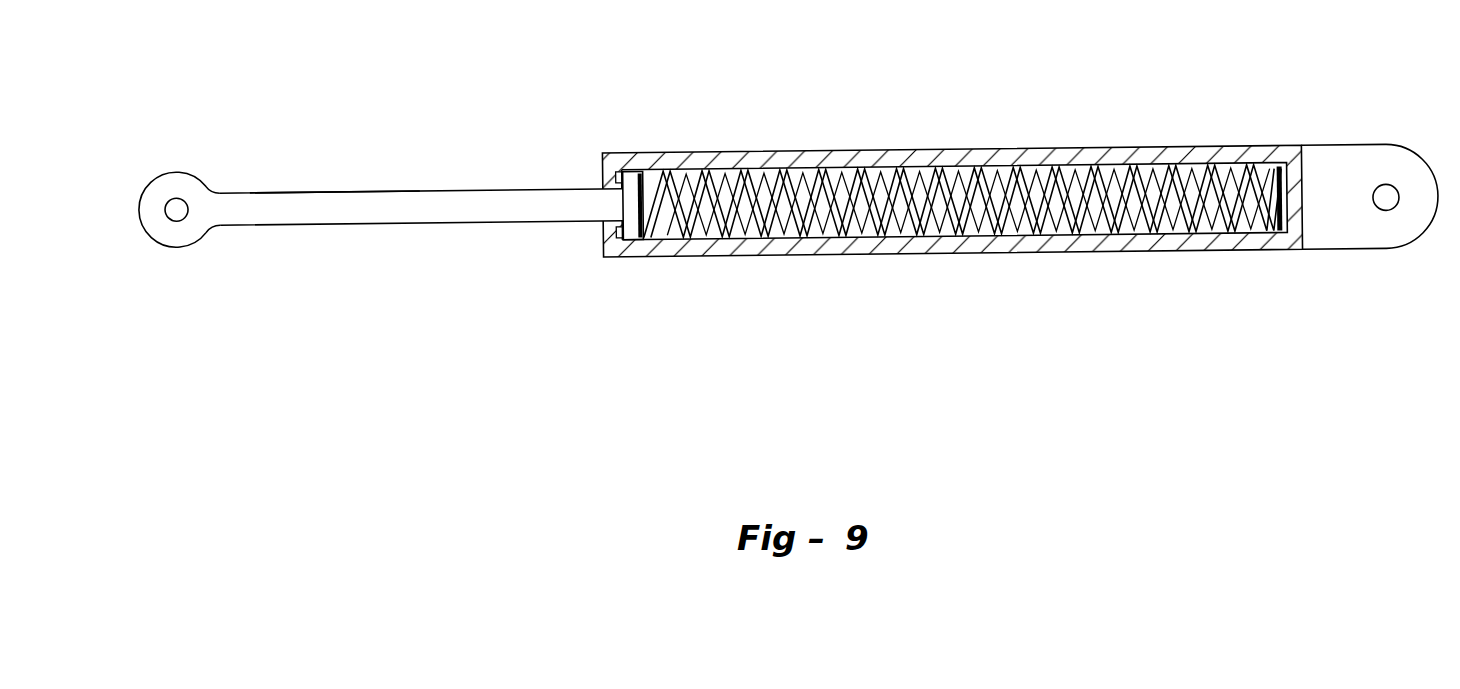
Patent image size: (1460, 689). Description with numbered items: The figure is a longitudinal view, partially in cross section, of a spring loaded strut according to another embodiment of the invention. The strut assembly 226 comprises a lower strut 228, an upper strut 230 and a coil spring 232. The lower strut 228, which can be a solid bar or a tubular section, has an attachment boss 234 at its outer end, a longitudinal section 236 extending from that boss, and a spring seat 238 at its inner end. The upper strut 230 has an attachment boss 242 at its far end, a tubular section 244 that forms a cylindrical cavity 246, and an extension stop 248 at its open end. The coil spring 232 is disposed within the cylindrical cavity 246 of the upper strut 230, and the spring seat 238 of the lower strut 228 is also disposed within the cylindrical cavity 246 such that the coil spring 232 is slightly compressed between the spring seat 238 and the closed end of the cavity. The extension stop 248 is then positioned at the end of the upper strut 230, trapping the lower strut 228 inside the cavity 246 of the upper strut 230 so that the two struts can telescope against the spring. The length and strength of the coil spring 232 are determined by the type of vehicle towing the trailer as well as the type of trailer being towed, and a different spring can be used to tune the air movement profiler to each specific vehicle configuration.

The strut assembly 226 is at (705, 152).
The lower strut 228 is at (365, 227).
The upper strut 230 is at (1116, 251).
The coil spring 232 is at (834, 205).
The attachment boss 234 is at (160, 245).
The longitudinal section 236 is at (287, 192).
The spring seat 238 is at (650, 241).
The attachment boss 242 is at (1342, 162).
The tubular section 244 is at (897, 258).
The cylindrical cavity 246 is at (978, 178).
The extension stop 248 is at (598, 152).